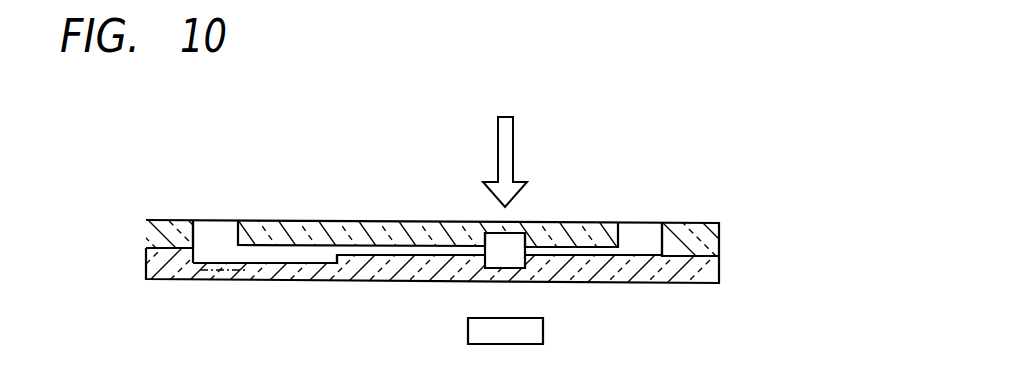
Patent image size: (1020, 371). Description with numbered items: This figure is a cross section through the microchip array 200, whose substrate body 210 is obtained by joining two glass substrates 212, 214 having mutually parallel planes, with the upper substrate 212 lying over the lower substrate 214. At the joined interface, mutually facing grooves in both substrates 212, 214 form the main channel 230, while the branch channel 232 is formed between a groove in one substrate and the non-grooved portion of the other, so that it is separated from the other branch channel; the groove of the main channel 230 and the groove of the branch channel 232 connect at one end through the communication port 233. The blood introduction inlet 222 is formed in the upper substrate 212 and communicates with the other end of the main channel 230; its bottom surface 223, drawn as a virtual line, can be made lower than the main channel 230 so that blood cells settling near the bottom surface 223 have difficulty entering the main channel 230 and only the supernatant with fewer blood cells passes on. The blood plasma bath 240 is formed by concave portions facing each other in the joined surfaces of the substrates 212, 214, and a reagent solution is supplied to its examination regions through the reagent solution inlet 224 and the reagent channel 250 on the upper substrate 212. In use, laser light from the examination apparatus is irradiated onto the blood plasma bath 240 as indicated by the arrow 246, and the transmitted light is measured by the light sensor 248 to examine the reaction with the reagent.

The microchip array 200 is at (768, 182).
The substrate body 210 is at (467, 239).
The substrate 212 is at (444, 218).
The substrate 214 is at (430, 265).
The blood introduction inlet 222 is at (196, 236).
The bottom surface 223 is at (212, 275).
The reagent solution inlet 224 is at (655, 226).
The main channel 230 is at (285, 249).
The branch channel 232 is at (384, 249).
The communication port 233 is at (341, 251).
The blood plasma bath 240 is at (488, 238).
The arrow 246 is at (507, 135).
The light sensor 248 is at (527, 329).
The reagent channel 250 is at (569, 221).